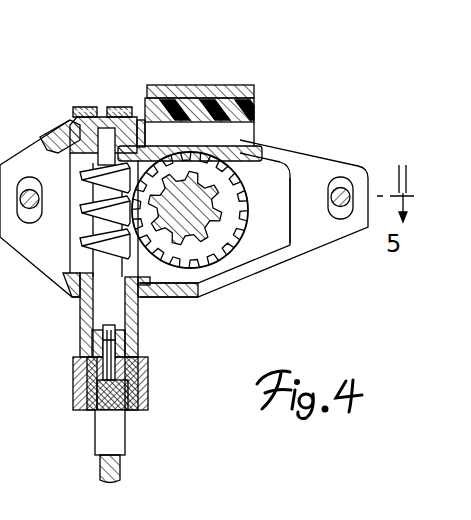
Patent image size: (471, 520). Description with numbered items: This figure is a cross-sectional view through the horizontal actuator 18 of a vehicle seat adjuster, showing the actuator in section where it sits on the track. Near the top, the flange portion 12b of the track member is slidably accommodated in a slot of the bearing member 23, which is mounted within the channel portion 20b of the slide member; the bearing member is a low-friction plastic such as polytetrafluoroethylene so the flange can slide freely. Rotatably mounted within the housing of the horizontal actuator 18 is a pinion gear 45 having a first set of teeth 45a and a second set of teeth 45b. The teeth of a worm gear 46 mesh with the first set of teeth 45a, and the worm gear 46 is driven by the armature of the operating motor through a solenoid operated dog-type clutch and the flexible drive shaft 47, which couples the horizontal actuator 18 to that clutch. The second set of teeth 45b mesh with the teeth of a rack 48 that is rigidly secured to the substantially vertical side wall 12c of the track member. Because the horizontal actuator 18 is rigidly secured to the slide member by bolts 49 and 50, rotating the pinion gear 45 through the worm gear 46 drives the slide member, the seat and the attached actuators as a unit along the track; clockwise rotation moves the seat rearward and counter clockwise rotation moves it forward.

The flange portion 12b is at (243, 130).
The substantially vertical side wall 12c is at (258, 152).
The horizontal actuator 18 is at (292, 153).
The channel portion 20b is at (165, 85).
The bearing member 23 is at (145, 116).
The pinion gear 45 is at (214, 258).
The first set of teeth 45a is at (172, 271).
The second set of teeth 45b is at (203, 204).
The worm gear 46 is at (98, 219).
The flexible drive shaft 47 is at (108, 437).
The rack 48 is at (251, 170).
The bolt 49 is at (25, 178).
The bolt 50 is at (345, 185).